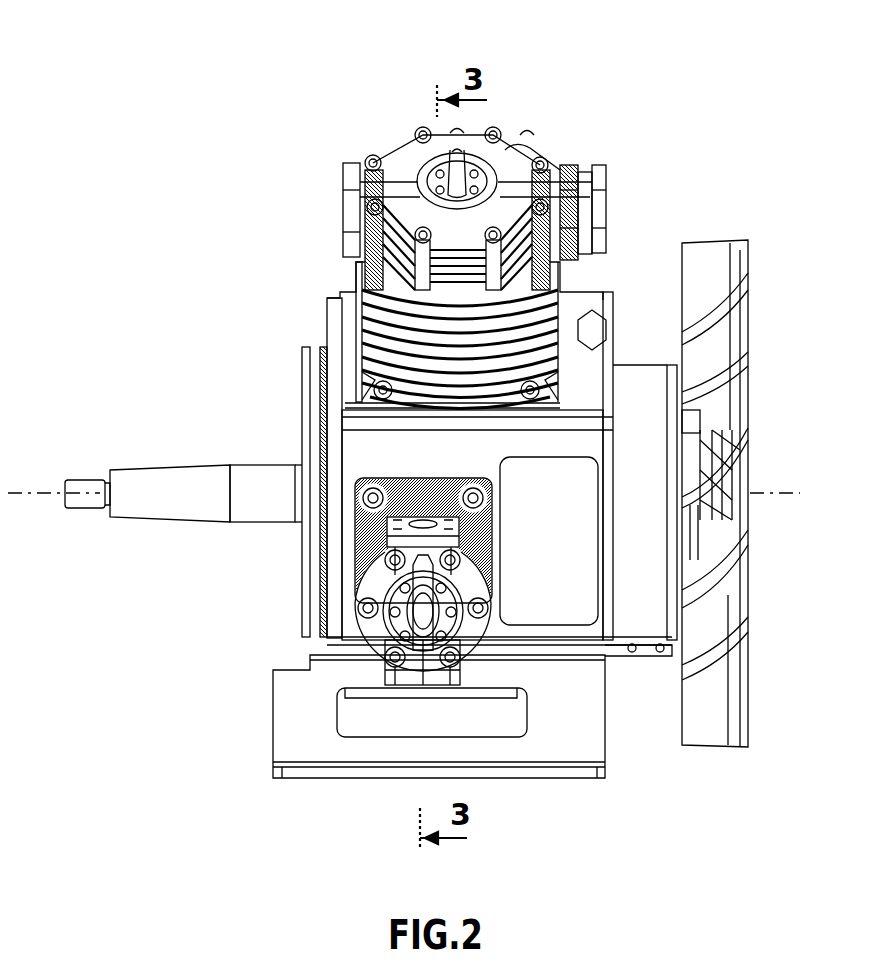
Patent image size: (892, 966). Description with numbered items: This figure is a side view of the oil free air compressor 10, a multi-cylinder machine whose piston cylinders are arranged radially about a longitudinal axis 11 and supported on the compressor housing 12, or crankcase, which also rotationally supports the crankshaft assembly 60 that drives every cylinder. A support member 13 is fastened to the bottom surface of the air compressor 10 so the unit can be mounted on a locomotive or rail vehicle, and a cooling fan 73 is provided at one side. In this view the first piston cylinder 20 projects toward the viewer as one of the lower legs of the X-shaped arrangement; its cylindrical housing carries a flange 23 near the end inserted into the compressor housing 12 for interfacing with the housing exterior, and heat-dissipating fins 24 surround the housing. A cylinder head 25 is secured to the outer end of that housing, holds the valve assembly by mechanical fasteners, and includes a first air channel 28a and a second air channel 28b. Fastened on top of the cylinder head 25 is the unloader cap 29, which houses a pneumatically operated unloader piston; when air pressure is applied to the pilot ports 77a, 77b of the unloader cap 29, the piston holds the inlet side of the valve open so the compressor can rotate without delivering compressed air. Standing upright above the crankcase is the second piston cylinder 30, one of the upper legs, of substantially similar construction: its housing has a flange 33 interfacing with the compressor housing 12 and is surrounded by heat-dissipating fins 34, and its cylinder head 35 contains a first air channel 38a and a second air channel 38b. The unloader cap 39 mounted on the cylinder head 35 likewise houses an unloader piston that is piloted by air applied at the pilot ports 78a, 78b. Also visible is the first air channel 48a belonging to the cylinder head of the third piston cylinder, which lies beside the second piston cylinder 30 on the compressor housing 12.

The air compressor 10 is at (231, 202).
The longitudinal axis 11 is at (38, 495).
The compressor housing 12 is at (355, 463).
The support member 13 is at (590, 752).
The first piston cylinder 20 is at (345, 620).
The flange 23 is at (390, 492).
The heat-dissipating fins 24 is at (400, 527).
The cylinder head 25 is at (486, 648).
The first air channel 28a is at (420, 560).
The second air channel 28b is at (408, 683).
The unloader cap 29 is at (384, 657).
The second piston cylinder 30 is at (358, 152).
The flange 33 is at (360, 400).
The heat-dissipating fins 34 is at (350, 312).
The cylinder head 35 is at (536, 166).
The first air channel 38a is at (570, 228).
The second air channel 38b is at (343, 220).
The unloader cap 39 is at (468, 172).
The first air channel 48a is at (615, 170).
The crankshaft assembly 60 is at (155, 490).
The cooling fan 73 is at (730, 703).
The pilot port 77a is at (425, 645).
The pilot port 77b is at (482, 556).
The pilot port 78a is at (578, 198).
The pilot port 78b is at (458, 170).